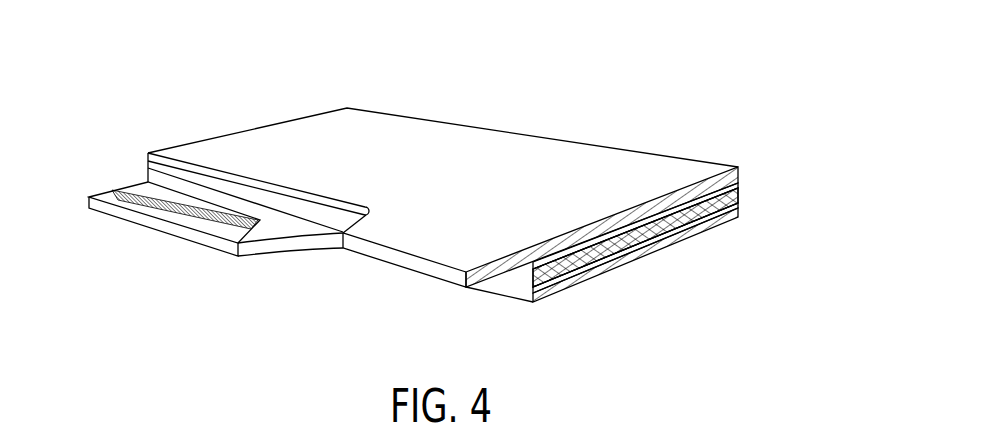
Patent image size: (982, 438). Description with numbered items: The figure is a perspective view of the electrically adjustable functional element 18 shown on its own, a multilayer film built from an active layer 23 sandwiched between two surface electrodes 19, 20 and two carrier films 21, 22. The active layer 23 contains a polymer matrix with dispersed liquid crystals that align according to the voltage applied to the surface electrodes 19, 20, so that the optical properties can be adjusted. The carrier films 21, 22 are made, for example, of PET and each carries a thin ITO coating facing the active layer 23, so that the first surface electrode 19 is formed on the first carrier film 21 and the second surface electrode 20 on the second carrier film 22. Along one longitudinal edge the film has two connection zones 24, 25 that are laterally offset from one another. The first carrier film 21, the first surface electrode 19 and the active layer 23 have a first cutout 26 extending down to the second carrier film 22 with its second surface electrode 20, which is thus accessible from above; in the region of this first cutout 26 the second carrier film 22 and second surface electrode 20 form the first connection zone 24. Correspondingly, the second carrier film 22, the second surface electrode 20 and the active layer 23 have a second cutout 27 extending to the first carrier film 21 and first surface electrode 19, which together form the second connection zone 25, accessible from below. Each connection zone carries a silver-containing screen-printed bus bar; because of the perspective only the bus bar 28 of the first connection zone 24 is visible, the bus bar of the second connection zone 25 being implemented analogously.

The functional element 18 is at (519, 103).
The first surface electrode 19 is at (733, 183).
The second surface electrode 20 is at (733, 207).
The first carrier film 21 is at (738, 167).
The second carrier film 22 is at (733, 215).
The active layer 23 is at (738, 194).
The first connection zone 24 is at (135, 195).
The second connection zone 25 is at (452, 287).
The first cutout 26 is at (140, 167).
The second cutout 27 is at (413, 279).
The bus bar 28 is at (240, 225).